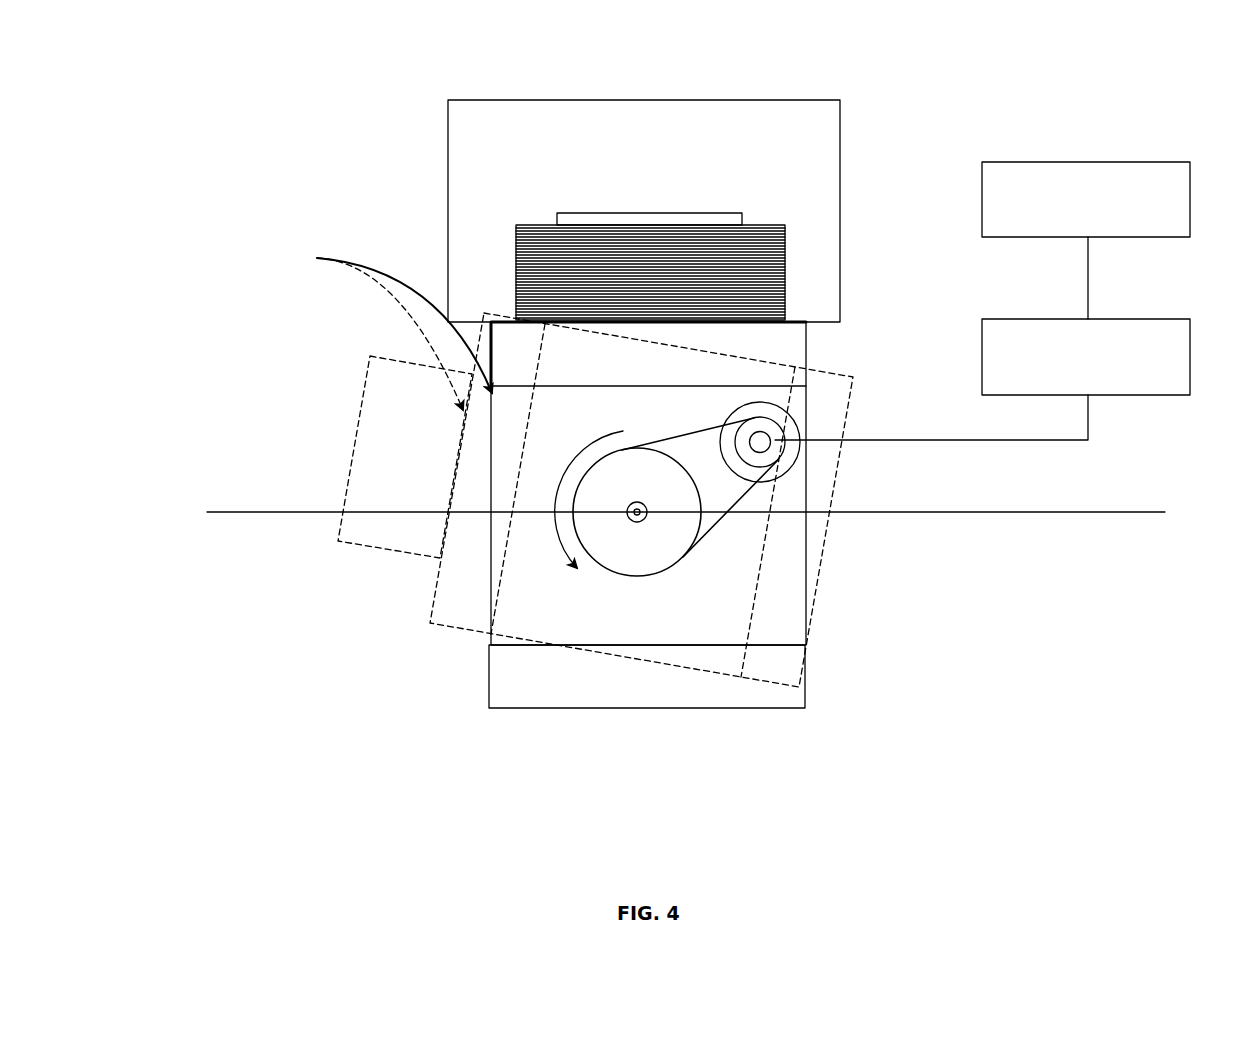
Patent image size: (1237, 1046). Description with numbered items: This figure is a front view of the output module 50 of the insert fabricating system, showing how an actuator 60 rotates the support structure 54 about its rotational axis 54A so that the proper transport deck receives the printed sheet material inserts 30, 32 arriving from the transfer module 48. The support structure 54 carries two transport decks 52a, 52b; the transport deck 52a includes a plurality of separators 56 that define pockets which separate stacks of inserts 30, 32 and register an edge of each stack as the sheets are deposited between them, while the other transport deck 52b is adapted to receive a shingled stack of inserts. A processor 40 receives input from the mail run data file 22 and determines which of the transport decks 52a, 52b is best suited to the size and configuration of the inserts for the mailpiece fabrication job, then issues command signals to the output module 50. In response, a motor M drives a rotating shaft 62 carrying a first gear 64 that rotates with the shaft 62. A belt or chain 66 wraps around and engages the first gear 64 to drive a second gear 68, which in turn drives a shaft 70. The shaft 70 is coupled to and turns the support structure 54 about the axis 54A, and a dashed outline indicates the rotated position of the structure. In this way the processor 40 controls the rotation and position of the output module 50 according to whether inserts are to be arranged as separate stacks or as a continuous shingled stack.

The mail run data file 22 is at (1051, 162).
The insert material 30 is at (723, 218).
The pre-cut inserts 32 is at (752, 233).
The processor 40 is at (1060, 319).
The transfer module 48 is at (575, 98).
The output module 50 is at (384, 402).
The transport deck 52a is at (532, 322).
The transport deck 52b is at (538, 708).
The support structure 54 is at (807, 543).
The rotational axis 54A is at (637, 515).
The separators 56 is at (627, 212).
The actuator 60 is at (760, 498).
The rotating shaft 62 is at (765, 447).
The first gear 64 is at (757, 417).
The belt or chain 66 is at (685, 430).
The second gear 68 is at (612, 452).
The shaft 70 is at (643, 522).
The motor M is at (782, 420).